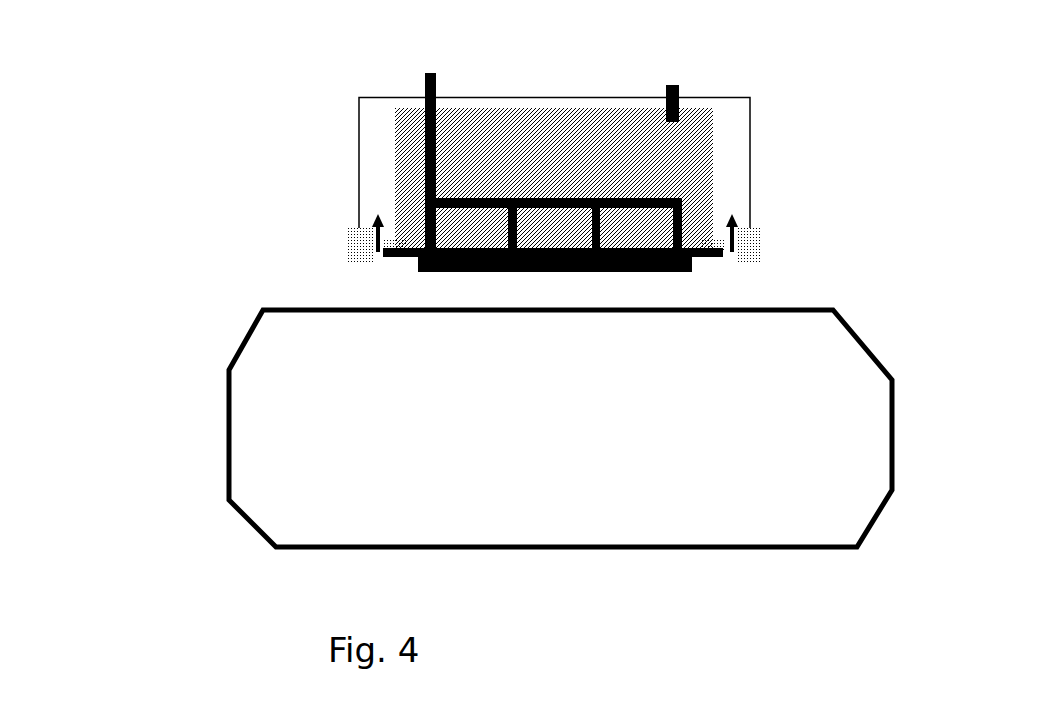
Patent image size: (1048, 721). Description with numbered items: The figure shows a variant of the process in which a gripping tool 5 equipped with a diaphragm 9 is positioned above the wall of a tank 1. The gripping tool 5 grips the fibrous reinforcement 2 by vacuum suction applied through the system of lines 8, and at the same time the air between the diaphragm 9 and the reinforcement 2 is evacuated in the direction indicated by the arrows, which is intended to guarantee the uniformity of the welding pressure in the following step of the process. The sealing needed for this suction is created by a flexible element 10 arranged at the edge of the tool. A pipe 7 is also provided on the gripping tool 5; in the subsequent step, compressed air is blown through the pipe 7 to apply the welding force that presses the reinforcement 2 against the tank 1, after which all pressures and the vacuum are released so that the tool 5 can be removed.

The tank 1 is at (255, 298).
The fibrous reinforcement 2 is at (444, 283).
The gripping tool 5 is at (344, 106).
The pipe 7 is at (655, 68).
The system of lines 8 is at (418, 56).
The diaphragm 9 is at (711, 262).
The flexible element 10 is at (775, 230).